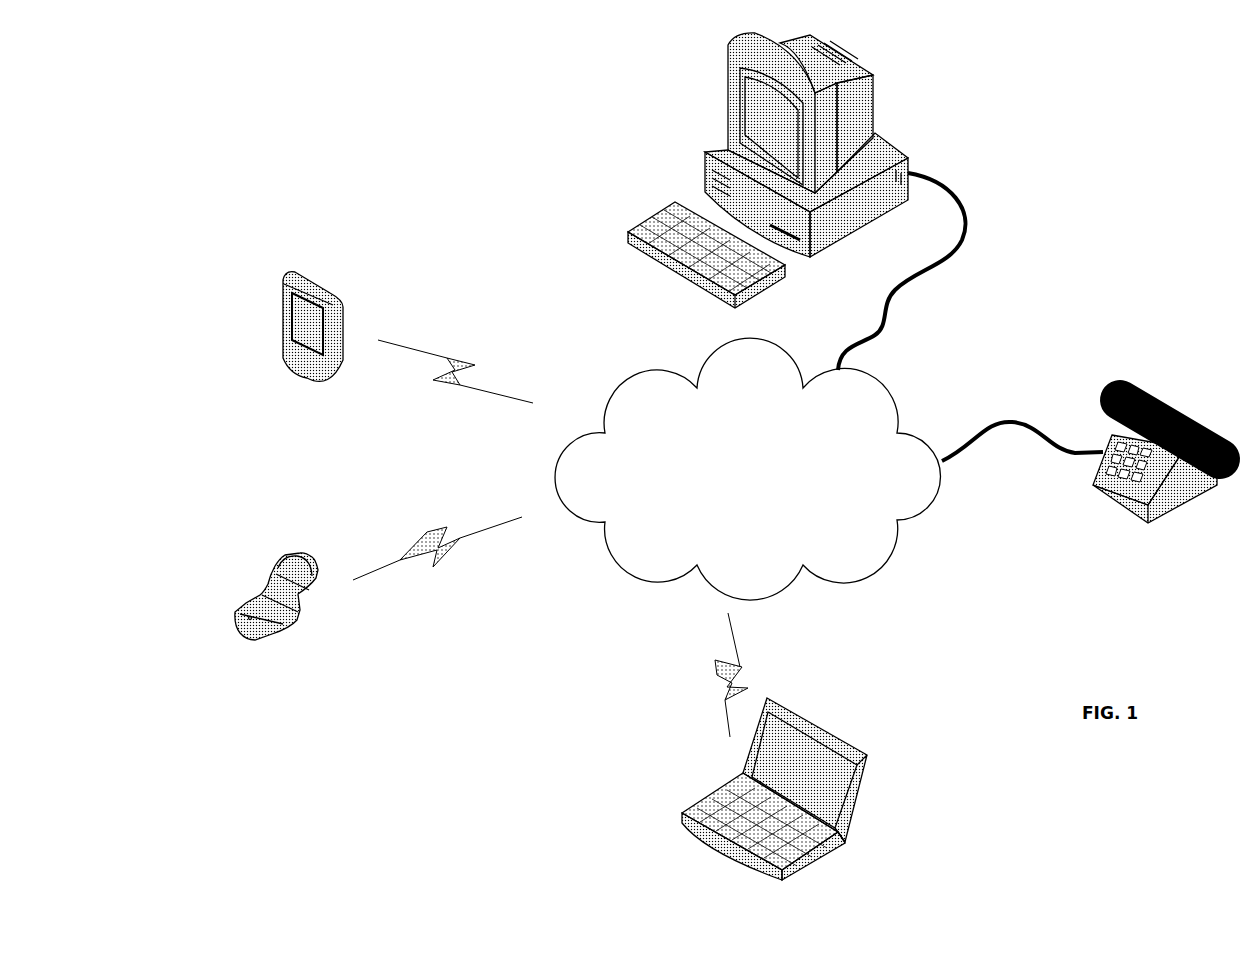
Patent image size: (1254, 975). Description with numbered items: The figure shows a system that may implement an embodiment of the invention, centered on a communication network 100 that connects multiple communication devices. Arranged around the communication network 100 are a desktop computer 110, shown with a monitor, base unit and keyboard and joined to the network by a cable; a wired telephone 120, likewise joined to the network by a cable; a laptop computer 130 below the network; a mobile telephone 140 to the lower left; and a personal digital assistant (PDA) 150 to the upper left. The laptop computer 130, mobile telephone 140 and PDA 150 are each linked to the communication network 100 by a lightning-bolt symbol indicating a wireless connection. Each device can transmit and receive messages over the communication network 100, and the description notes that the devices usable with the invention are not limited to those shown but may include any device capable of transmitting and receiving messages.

The communication network 100 is at (647, 537).
The desktop computer 110 is at (796, 191).
The wired telephone 120 is at (1081, 475).
The laptop computer 130 is at (774, 800).
The mobile telephone 140 is at (276, 618).
The personal digital assistant (PDA) 150 is at (311, 339).